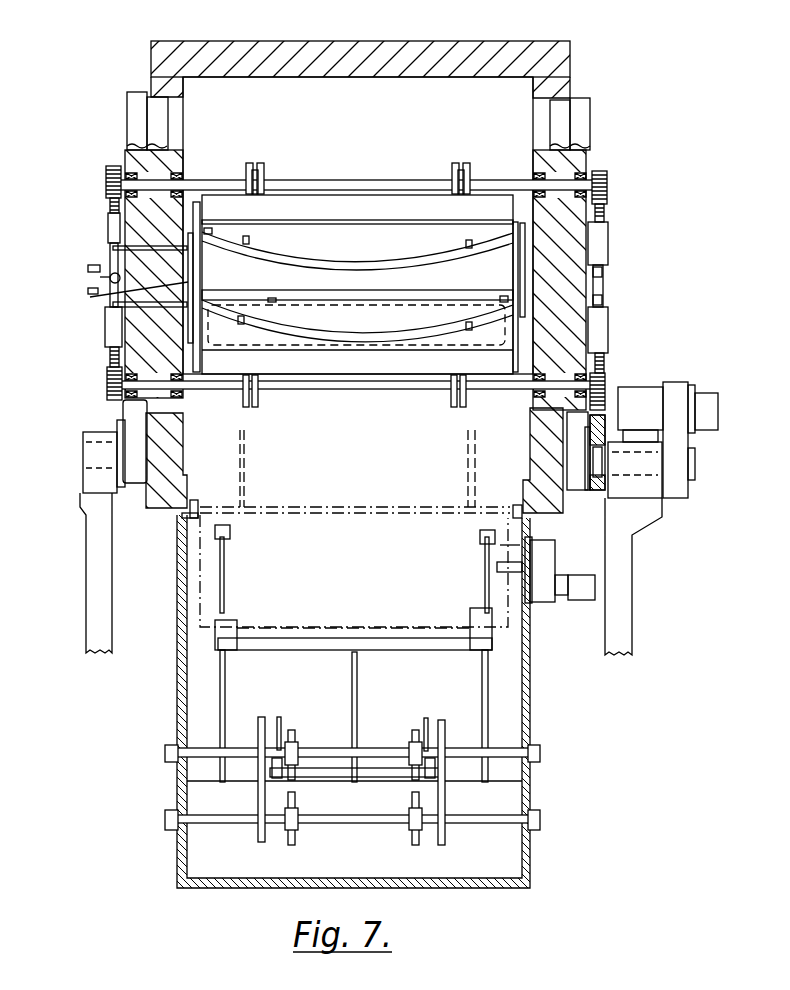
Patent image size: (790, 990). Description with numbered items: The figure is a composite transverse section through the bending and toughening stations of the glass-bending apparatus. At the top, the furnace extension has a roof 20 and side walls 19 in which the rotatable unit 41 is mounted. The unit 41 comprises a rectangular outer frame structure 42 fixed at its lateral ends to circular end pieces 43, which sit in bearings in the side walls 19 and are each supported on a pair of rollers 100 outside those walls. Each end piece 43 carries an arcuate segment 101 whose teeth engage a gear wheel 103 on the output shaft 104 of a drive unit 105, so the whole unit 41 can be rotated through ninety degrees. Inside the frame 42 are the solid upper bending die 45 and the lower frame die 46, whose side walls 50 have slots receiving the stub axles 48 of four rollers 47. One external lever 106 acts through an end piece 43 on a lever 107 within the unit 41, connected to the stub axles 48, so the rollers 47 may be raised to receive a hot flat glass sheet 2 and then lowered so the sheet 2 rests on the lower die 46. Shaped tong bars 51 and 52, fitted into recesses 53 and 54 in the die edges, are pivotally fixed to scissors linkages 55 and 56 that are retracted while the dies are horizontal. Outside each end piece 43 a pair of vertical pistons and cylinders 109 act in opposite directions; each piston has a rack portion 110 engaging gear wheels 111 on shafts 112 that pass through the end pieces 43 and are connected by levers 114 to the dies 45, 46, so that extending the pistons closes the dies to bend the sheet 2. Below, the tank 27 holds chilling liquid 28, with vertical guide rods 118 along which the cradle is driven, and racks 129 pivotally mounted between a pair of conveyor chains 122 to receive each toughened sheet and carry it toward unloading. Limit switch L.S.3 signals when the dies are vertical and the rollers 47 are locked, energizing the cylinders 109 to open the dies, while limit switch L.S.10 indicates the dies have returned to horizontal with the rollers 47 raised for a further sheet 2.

The glass sheet 2 is at (247, 290).
The side walls 19 is at (162, 85).
The roof 20 is at (258, 52).
The tank 27 is at (523, 700).
The chilling liquid 28 is at (203, 541).
The rotatable unit 41 is at (123, 128).
The outer frame structure 42 is at (378, 208).
The circular end pieces 43 is at (140, 108).
The upper bending die 45 is at (425, 237).
The lower bending die 46 is at (360, 345).
The rollers 47 is at (271, 298).
The stub axles 48 is at (504, 297).
The side walls 50 is at (513, 387).
The tong bar 51 is at (353, 262).
The tong bar 52 is at (413, 325).
The recess 53 is at (215, 230).
The recess 54 is at (279, 335).
The scissors linkage 55 is at (467, 244).
The scissors linkage 56 is at (247, 240).
The rollers 100 is at (575, 491).
The arcuate segment 101 is at (603, 416).
The gear wheel 103 is at (613, 386).
The output shaft 104 is at (633, 476).
The drive unit 105 is at (636, 393).
The levers 106 is at (111, 259).
The levers 107 is at (112, 300).
The pistons and cylinders 109 is at (599, 237).
The rack portion 110 is at (604, 211).
The gear wheels 111 is at (608, 181).
The shafts 112 is at (201, 178).
The levers 114 is at (264, 178).
The vertical guide rods 118 is at (226, 672).
The conveyor chains 122 is at (257, 755).
The racks 129 is at (282, 718).
The limit switch L.S.10 is at (88, 268).
The limit switch L.S.3 is at (88, 292).